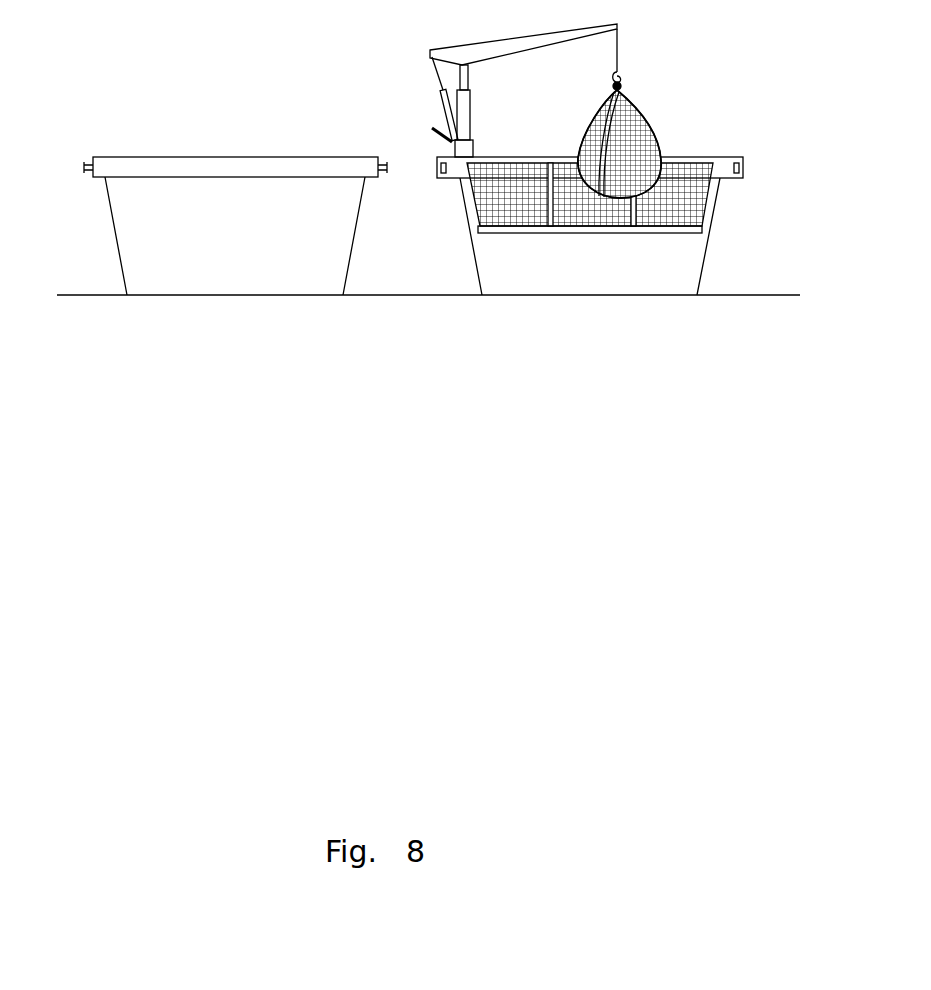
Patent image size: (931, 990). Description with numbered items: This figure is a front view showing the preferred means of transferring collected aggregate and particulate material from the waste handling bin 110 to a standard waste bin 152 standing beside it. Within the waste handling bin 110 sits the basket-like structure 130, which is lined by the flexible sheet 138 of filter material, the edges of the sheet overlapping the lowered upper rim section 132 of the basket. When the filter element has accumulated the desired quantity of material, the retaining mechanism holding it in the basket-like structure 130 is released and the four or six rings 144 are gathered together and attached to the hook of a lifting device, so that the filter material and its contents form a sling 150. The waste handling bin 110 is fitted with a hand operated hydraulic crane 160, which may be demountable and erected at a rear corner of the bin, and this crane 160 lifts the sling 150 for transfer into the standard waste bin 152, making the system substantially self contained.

The waste handling bin 110 is at (625, 202).
The basket-like structure 130 is at (702, 148).
The lowered upper rim section 132 is at (590, 232).
The flexible sheet of filter material 138 is at (655, 132).
The rings 144 is at (628, 80).
The sling 150 is at (647, 140).
The standard waste bin 152 is at (98, 232).
The hand operated hydraulic crane 160 is at (418, 71).